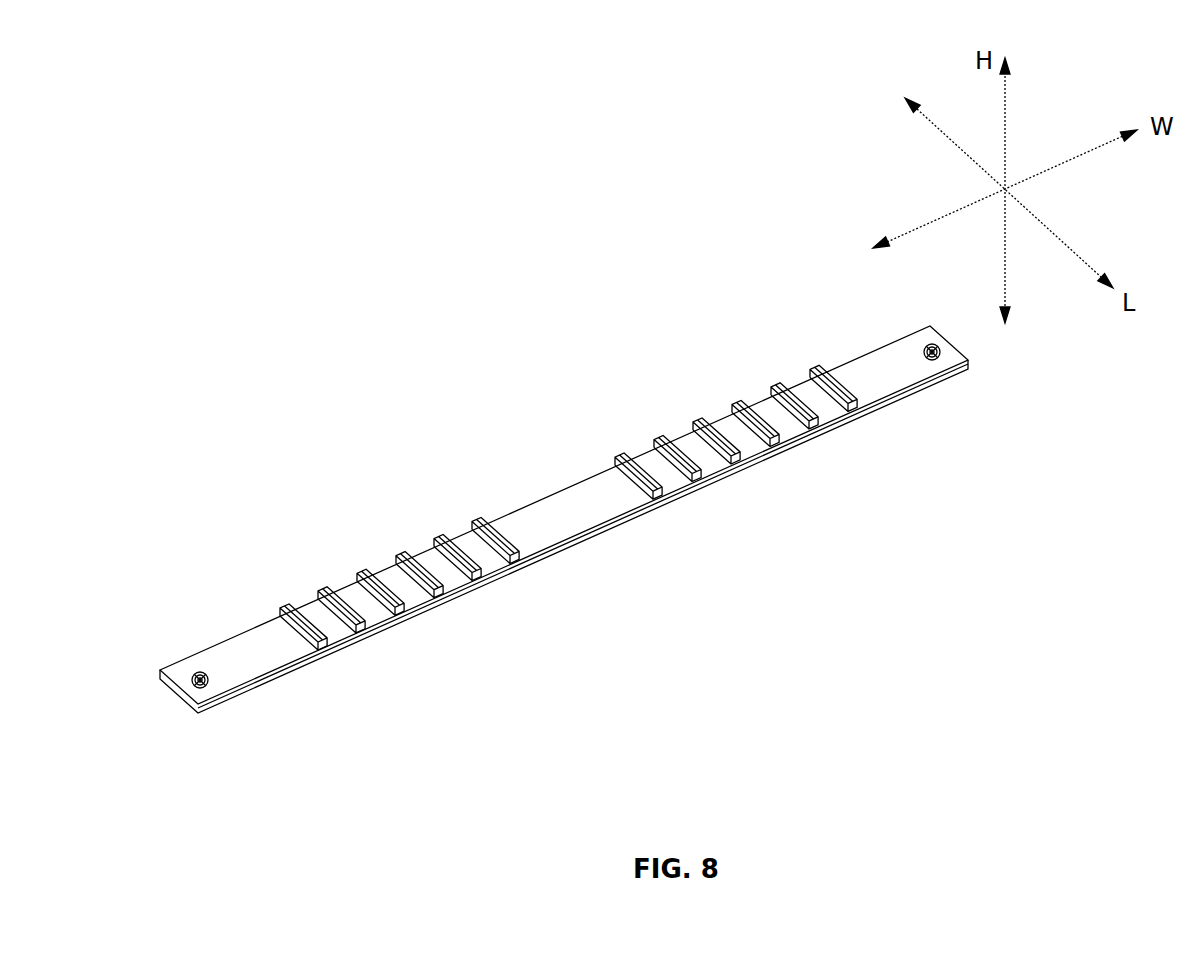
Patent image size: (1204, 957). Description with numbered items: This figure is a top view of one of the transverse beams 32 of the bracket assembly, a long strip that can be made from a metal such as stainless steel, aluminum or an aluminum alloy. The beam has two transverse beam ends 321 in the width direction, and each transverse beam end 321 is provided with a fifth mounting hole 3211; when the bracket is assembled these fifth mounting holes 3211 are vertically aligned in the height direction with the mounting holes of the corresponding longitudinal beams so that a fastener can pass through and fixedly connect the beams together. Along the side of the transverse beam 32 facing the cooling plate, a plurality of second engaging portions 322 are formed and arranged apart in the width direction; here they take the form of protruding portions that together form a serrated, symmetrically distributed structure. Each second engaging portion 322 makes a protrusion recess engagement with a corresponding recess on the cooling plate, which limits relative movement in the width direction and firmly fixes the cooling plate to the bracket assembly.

The transverse beam 32 is at (600, 537).
The transverse beam end 321 is at (600, 569).
The fifth mounting hole 3211 is at (208, 678).
The second engaging portion 322 is at (272, 612).